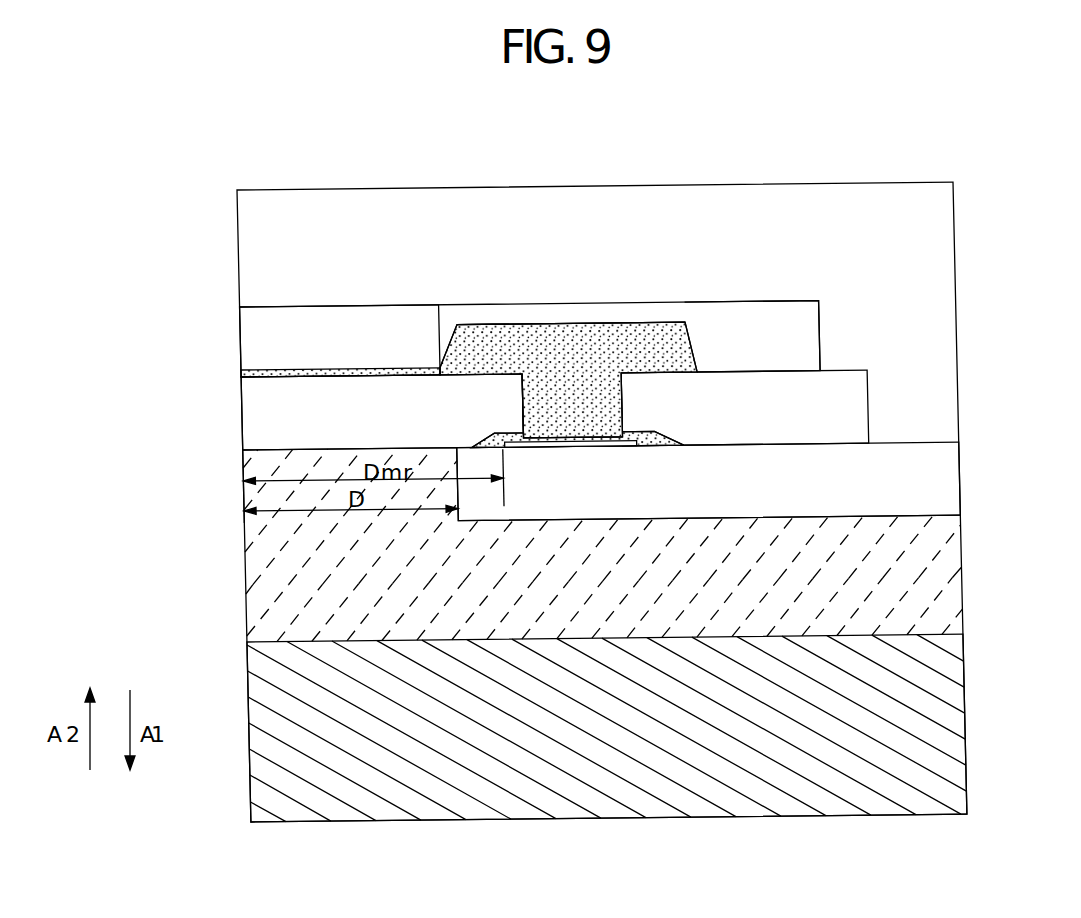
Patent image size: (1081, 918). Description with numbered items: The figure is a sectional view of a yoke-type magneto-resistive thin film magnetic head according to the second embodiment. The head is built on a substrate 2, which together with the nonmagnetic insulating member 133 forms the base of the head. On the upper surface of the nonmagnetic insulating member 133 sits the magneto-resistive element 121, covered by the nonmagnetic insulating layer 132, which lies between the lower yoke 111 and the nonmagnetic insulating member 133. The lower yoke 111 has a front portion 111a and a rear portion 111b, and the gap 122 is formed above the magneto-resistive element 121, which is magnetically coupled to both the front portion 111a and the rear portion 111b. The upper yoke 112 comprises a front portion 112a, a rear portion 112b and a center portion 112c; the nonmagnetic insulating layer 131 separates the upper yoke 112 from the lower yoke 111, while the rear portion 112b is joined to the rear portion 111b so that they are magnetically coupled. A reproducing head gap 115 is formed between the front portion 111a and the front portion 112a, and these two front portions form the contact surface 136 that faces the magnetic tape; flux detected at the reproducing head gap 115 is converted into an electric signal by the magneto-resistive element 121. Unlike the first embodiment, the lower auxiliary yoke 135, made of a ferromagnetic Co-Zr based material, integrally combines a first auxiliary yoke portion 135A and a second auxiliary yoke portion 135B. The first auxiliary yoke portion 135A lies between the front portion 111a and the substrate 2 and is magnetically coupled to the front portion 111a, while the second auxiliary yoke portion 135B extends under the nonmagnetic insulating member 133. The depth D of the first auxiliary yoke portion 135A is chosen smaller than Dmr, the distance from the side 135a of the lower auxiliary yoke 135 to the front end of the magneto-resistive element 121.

The substrate 2 is at (902, 685).
The lower yoke 111 is at (561, 289).
The front portion of the lower yoke 111a is at (305, 412).
The rear portion of the lower yoke 111b is at (838, 395).
The upper yoke 112 is at (579, 273).
The front portion of the upper yoke 112a is at (302, 333).
The rear portion of the upper yoke 112b is at (763, 333).
The center portion of the upper yoke 112c is at (545, 315).
The reproducing head gap 115 is at (342, 367).
The magneto-resistive element 121 is at (573, 441).
The gap 122 is at (577, 387).
The nonmagnetic insulating layer 131 is at (658, 347).
The nonmagnetic insulating layer 132 is at (637, 435).
The nonmagnetic insulating member 133 is at (893, 483).
The lower auxiliary yoke 135 is at (520, 563).
The first auxiliary yoke portion 135A is at (247, 480).
The second auxiliary yoke portion 135B is at (640, 605).
The side of the lower auxiliary yoke 135a is at (179, 486).
The contact surface 136 is at (241, 338).